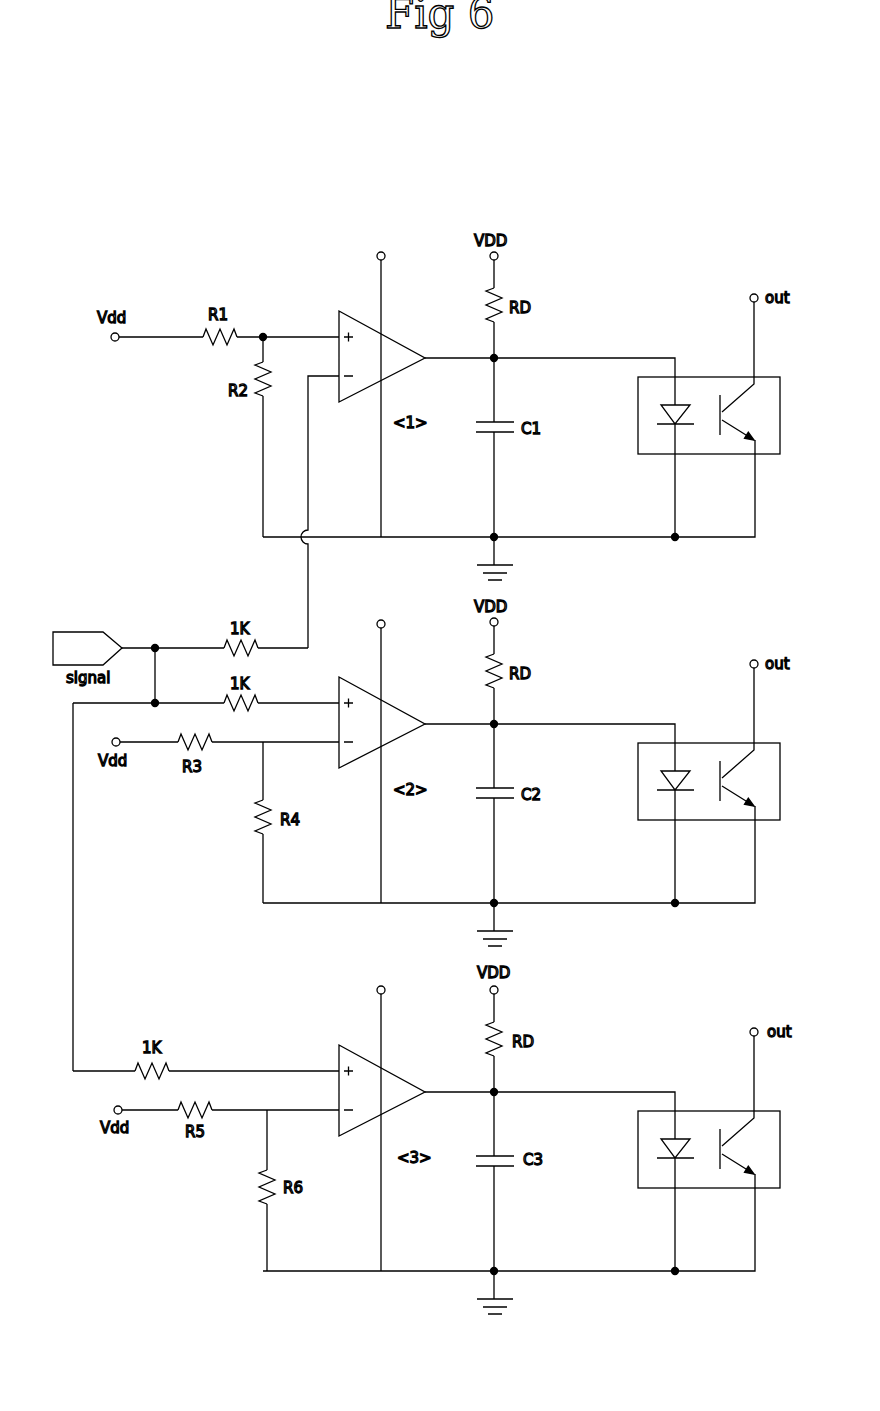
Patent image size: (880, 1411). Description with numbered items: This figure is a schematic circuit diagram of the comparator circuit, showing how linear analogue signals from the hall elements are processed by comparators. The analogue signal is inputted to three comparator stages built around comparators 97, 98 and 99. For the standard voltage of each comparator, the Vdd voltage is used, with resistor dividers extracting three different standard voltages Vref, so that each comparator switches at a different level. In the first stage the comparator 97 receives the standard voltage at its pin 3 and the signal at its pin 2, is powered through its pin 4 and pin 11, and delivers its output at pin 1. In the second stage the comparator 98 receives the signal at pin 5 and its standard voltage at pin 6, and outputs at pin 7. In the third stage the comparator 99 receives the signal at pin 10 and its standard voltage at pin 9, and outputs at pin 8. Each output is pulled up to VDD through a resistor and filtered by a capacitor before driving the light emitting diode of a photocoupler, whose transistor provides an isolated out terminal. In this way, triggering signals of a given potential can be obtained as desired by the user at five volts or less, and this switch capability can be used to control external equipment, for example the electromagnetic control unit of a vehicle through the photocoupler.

The comparator 97 is at (352, 311).
The comparator 98 is at (354, 678).
The comparator 99 is at (355, 1045).
The output pin of first comparator 1 is at (459, 345).
The inverting input pin of first comparator 2 is at (320, 503).
The non-inverting input pin of first comparator 3 is at (288, 328).
The positive supply pin of first comparator 4 is at (388, 316).
The negative supply pin of first comparator 11 is at (395, 458).
The non-inverting input pin of second comparator 5 is at (298, 695).
The inverting input pin of second comparator 6 is at (275, 733).
The output pin of second comparator 7 is at (459, 737).
The output pin of third comparator 8 is at (459, 1103).
The inverting input pin of third comparator 9 is at (275, 1099).
The non-inverting input pin of third comparator 10 is at (254, 1062).